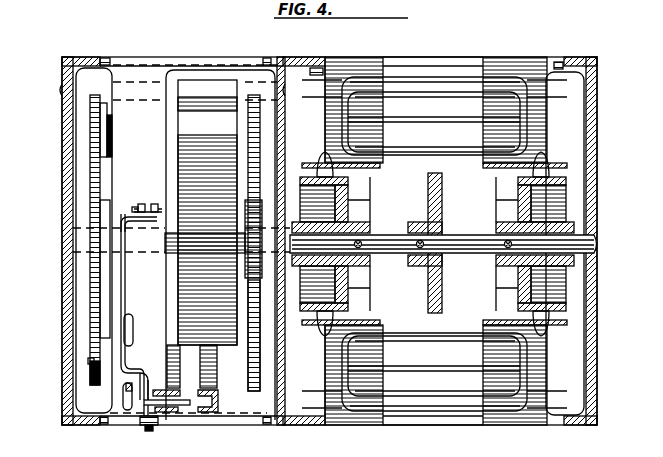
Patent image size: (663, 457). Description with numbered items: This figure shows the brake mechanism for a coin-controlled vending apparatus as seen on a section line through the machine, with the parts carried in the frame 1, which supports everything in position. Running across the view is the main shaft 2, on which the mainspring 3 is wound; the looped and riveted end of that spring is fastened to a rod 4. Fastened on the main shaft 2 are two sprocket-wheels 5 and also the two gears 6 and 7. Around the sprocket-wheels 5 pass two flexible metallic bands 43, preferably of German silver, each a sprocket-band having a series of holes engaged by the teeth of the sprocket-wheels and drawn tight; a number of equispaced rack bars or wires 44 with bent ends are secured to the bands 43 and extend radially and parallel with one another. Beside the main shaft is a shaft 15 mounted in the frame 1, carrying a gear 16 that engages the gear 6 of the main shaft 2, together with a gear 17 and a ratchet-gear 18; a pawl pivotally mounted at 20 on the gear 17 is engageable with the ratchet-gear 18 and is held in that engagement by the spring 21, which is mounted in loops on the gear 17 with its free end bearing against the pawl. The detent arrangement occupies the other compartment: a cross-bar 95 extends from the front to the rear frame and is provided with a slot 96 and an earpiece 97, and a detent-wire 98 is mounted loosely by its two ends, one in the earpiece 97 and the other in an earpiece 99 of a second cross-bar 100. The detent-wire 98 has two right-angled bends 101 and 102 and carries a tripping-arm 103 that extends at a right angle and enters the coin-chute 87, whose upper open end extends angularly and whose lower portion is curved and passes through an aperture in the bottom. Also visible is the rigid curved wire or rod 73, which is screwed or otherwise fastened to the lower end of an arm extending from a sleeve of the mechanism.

The frame 1 is at (63, 300).
The main shaft 2 is at (600, 246).
The mainspring 3 is at (177, 168).
The rod 4 is at (247, 85).
The sprocket-wheels 5 is at (302, 300).
The gear 6 is at (252, 380).
The gear 7 is at (438, 312).
The shaft 15 is at (218, 238).
The gear 16 is at (246, 276).
The gear 17 is at (90, 381).
The ratchet-gear 18 is at (126, 198).
The pivot 20 is at (103, 108).
The spring 21 is at (88, 361).
The flexible metallic bands 43 is at (383, 356).
The rack bars 44 is at (440, 78).
The rod 73 is at (123, 392).
The coin-chute 87 is at (214, 378).
The cross-bar 95 is at (138, 254).
The slot 96 is at (133, 330).
The earpiece 97 is at (158, 196).
The detent-wire 98 is at (126, 300).
The earpiece 99 is at (150, 432).
The cross-bar 100 is at (192, 424).
The right-angled bend 101 is at (144, 378).
The right-angled bend 102 is at (139, 234).
The tripping-arm 103 is at (187, 392).